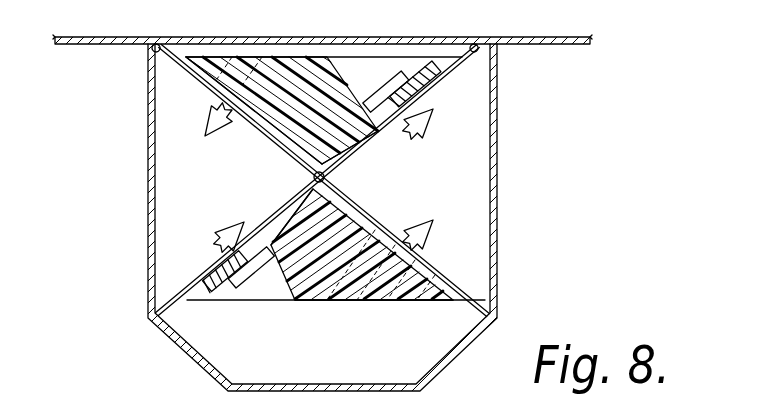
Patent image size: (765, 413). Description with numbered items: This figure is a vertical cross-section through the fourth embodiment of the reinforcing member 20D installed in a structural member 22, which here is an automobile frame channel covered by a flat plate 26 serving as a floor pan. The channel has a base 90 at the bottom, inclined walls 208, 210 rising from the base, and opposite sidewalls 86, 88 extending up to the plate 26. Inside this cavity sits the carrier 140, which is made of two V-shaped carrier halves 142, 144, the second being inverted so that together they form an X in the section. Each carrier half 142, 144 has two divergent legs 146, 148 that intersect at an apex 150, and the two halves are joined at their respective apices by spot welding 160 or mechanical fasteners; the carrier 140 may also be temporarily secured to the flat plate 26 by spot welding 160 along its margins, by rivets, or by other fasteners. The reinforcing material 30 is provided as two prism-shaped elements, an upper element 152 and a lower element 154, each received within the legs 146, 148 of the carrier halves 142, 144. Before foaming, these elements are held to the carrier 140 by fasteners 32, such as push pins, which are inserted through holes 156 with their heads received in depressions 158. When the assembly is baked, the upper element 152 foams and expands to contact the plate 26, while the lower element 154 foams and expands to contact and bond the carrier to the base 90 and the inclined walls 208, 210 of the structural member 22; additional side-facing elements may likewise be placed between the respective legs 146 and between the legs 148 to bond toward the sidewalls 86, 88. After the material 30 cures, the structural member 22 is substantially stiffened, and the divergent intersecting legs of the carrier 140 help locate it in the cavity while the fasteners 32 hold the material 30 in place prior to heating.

The flat plate 26 is at (523, 36).
The reinforcing member 20D is at (466, 74).
The structural member 22 is at (501, 178).
The sidewall 88 is at (150, 193).
The sidewall 86 is at (496, 208).
The base 90 is at (356, 383).
The inclined wall 210 is at (192, 360).
The inclined wall 208 is at (458, 347).
The carrier half 142 is at (192, 78).
The carrier half 144 is at (205, 289).
The spot welding 160 is at (163, 43).
The material 30 is at (370, 132).
The upper element 152 is at (321, 62).
The lower element 154 is at (389, 114).
The leg 146 is at (440, 88).
The leg 148 is at (203, 86).
The depression 158 is at (370, 70).
The hole 156 is at (226, 260).
The apex 150 is at (305, 170).
The carrier 140 is at (447, 299).
The fastener 32 is at (443, 213).